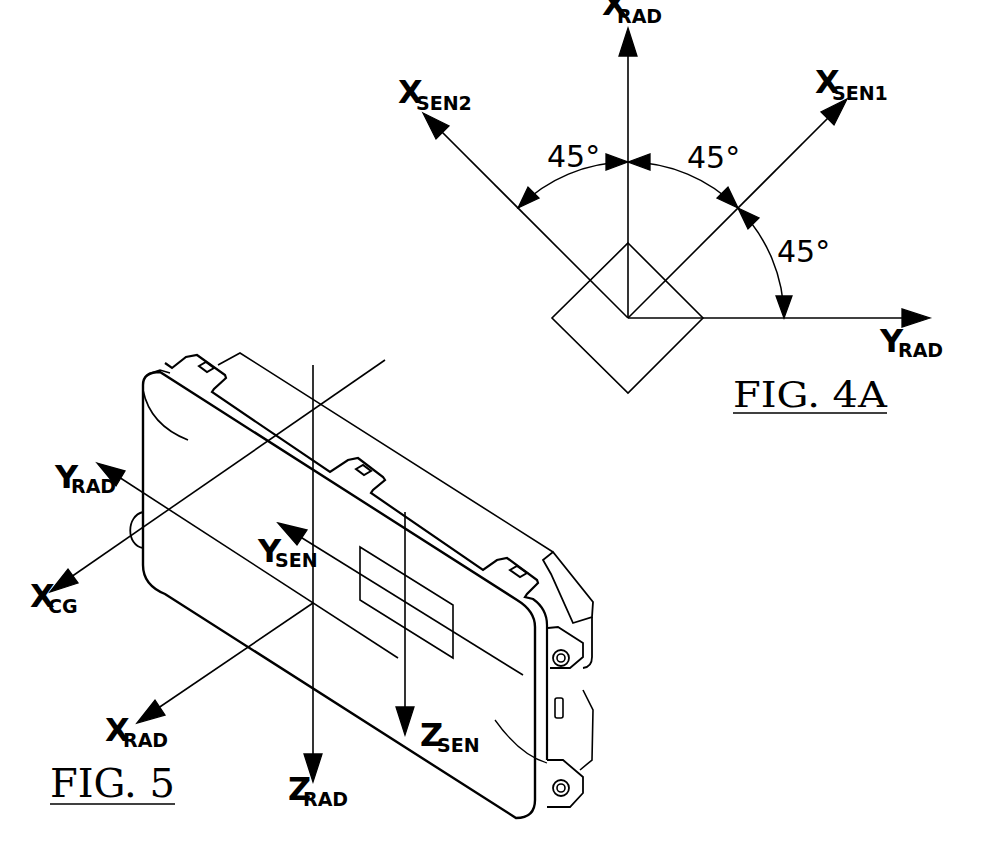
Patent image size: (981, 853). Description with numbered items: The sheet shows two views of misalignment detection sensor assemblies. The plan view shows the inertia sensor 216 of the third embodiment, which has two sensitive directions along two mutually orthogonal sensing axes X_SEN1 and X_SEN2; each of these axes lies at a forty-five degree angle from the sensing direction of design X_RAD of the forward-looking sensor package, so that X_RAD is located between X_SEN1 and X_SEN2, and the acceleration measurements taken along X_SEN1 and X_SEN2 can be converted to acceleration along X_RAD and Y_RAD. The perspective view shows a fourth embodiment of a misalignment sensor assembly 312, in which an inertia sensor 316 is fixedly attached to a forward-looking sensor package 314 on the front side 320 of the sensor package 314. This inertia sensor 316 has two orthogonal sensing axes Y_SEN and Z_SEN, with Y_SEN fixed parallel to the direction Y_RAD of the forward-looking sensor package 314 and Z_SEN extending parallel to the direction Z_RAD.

In FIG. 4A, the inertia sensor 216 is at (638, 355).
In FIG. 5, the misalignment sensor assembly 312 is at (112, 418).
In FIG. 5, the forward-looking sensor package 314 is at (143, 384).
In FIG. 5, the inertia sensor 316 is at (437, 603).
In FIG. 5, the front side 320 is at (577, 770).